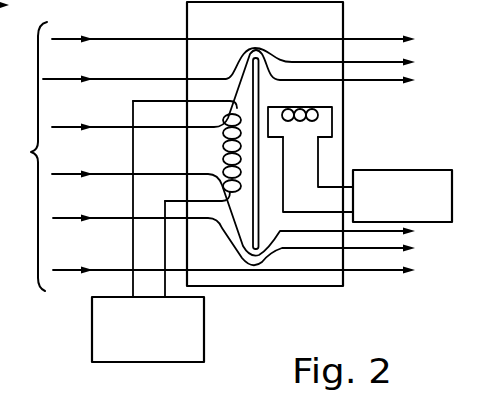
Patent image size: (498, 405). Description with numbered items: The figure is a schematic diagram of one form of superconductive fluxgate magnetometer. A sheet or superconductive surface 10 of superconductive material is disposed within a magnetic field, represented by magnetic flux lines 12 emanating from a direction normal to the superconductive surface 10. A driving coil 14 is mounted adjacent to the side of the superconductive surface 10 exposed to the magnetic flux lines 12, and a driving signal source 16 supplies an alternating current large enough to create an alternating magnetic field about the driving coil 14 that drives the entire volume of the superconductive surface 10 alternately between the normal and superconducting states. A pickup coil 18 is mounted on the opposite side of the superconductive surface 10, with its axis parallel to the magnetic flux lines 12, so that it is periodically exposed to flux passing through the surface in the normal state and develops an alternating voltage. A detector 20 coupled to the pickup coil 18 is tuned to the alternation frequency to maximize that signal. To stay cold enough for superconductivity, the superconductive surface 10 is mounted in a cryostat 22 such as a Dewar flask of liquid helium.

The superconductive surface 10 is at (259, 109).
The magnetic flux lines 12 is at (48, 156).
The driving coil 14 is at (228, 118).
The driving signal source 16 is at (192, 332).
The pickup coil 18 is at (318, 116).
The detector 20 is at (395, 175).
The cryostat 22 is at (335, 23).